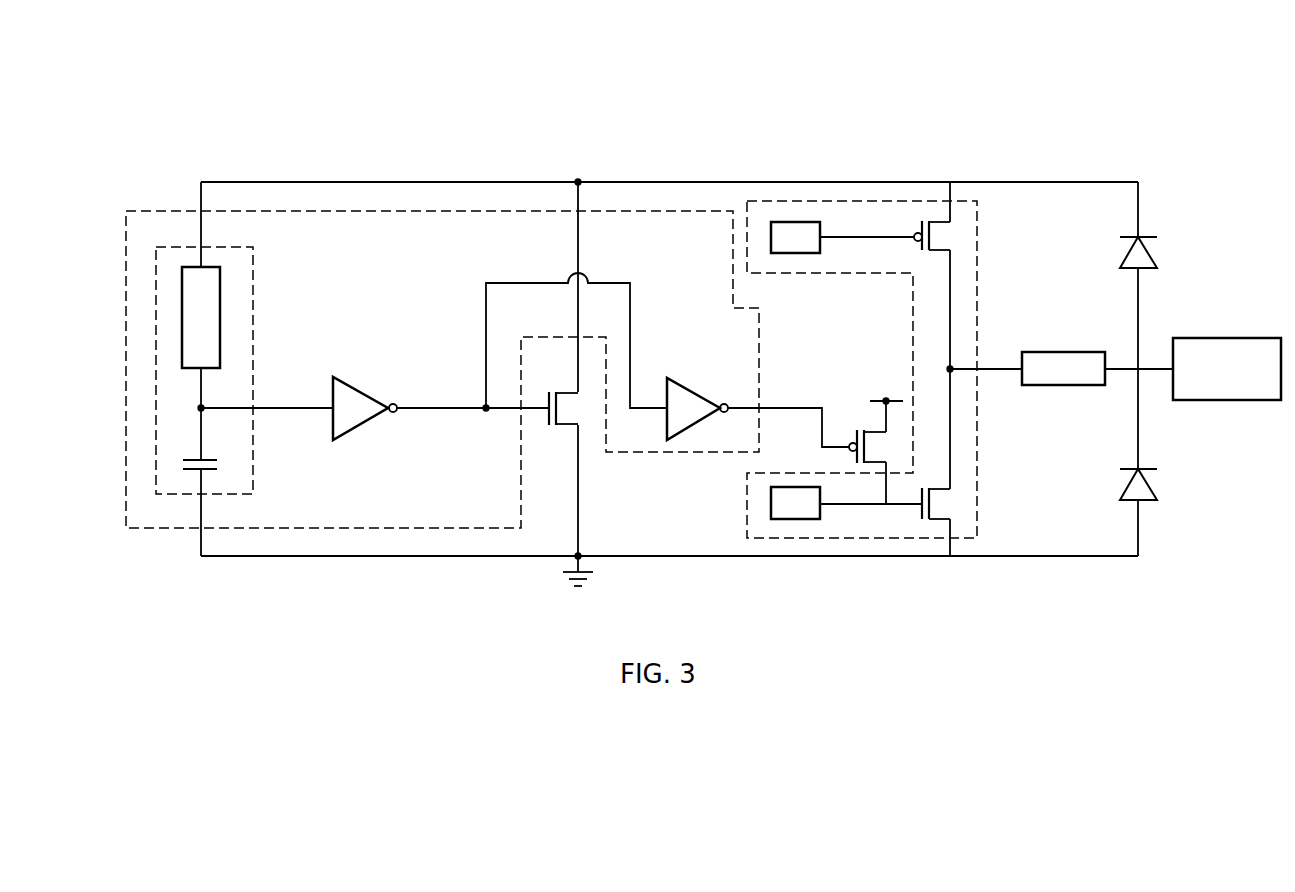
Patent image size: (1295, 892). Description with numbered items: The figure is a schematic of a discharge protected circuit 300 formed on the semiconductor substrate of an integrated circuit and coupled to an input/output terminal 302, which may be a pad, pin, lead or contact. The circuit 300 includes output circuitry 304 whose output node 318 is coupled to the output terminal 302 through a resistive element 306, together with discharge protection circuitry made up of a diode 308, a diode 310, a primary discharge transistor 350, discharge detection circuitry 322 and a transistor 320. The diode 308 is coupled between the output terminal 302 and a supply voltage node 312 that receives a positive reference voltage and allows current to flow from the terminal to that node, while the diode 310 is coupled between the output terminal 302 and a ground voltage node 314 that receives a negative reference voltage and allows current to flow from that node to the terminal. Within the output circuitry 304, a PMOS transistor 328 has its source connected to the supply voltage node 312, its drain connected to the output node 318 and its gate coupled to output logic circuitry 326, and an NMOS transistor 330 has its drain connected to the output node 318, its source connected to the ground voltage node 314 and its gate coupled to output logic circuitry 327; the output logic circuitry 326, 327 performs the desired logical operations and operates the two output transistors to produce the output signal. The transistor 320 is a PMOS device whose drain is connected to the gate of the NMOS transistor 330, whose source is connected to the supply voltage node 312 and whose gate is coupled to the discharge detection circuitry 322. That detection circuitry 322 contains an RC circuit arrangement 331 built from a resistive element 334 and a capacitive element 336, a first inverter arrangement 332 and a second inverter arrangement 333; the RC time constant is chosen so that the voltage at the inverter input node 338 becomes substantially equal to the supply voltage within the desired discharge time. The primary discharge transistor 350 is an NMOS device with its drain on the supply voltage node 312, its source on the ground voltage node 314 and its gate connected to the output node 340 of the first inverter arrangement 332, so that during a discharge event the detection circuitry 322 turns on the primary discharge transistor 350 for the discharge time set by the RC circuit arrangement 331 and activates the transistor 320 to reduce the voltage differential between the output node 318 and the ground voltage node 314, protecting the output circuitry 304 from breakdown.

The discharge protected circuit 300 is at (1020, 115).
The input/output terminal 302 is at (1227, 338).
The output circuitry 304 is at (862, 540).
The resistive element 306 is at (1068, 352).
The diode 308 is at (1157, 253).
The diode 310 is at (1157, 485).
The supply voltage node 312 is at (579, 181).
The ground voltage node 314 is at (579, 556).
The output node 318 is at (950, 369).
The transistor 320 is at (888, 447).
The discharge detection circuitry 322 is at (415, 211).
The output logic circuitry 326 is at (795, 255).
The output logic circuitry 327 is at (771, 503).
The PMOS transistor 328 is at (952, 236).
The NMOS transistor 330 is at (952, 505).
The RC circuit arrangement 331 is at (156, 458).
The first inverter arrangement 332 is at (356, 385).
The second inverter arrangement 333 is at (690, 385).
The resistive element 334 is at (182, 316).
The capacitive element 336 is at (193, 470).
The inverter input node 338 is at (201, 408).
The output node of the first inverter arrangement 340 is at (486, 412).
The primary discharge transistor 350 is at (579, 413).